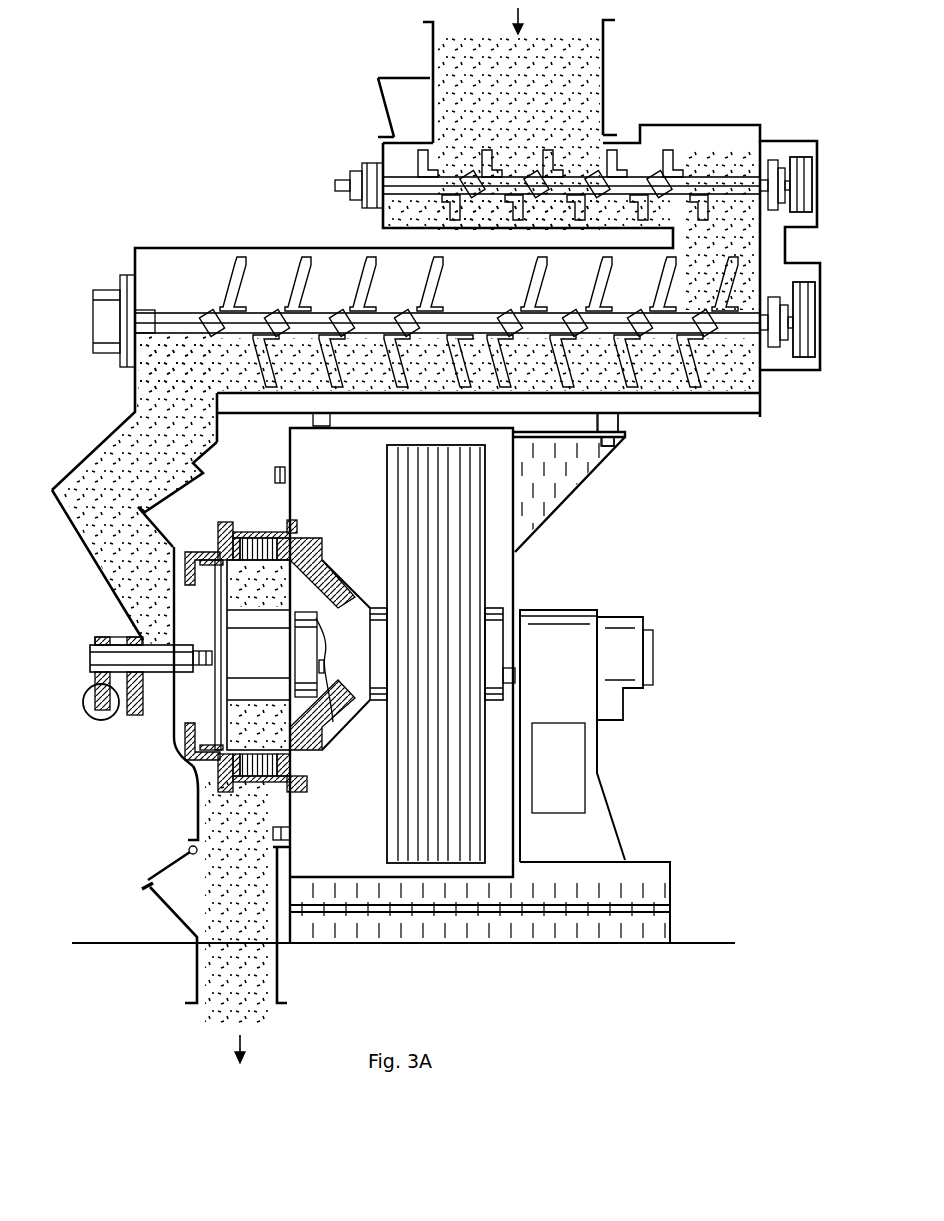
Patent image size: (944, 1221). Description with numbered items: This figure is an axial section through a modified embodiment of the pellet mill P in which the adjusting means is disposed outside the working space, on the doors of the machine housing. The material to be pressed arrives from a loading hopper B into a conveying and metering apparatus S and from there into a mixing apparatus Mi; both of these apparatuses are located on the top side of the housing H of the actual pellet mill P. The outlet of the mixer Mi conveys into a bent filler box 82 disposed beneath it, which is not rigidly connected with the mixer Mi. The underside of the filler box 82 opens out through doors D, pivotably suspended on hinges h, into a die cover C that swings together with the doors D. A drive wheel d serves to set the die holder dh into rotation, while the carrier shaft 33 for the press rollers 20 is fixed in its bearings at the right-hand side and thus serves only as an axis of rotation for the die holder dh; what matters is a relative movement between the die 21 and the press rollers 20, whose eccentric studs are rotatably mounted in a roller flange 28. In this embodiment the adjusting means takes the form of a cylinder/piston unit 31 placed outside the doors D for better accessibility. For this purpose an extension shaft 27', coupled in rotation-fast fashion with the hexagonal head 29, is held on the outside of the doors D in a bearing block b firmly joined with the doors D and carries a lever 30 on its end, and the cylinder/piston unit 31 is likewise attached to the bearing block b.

The loading hopper B is at (433, 56).
The conveying and metering apparatus S is at (372, 135).
The mixing apparatus Mi is at (268, 300).
The bent filler box 82 is at (62, 492).
The housing H is at (283, 440).
The hinges h is at (283, 477).
The pellet mill P is at (595, 519).
The drive wheel d is at (487, 540).
The die holder dh is at (305, 529).
The die 21 is at (270, 530).
The hexagonal head 29 is at (178, 712).
The roller flange 28 is at (178, 620).
The die cover C is at (207, 548).
The extension shaft 27' is at (123, 659).
The bearing block b is at (125, 637).
The lever 30 is at (90, 677).
The cylinder/piston unit 31 is at (103, 722).
The press rollers 20 is at (176, 746).
The doors D is at (176, 784).
The carrier shaft 33 is at (335, 722).